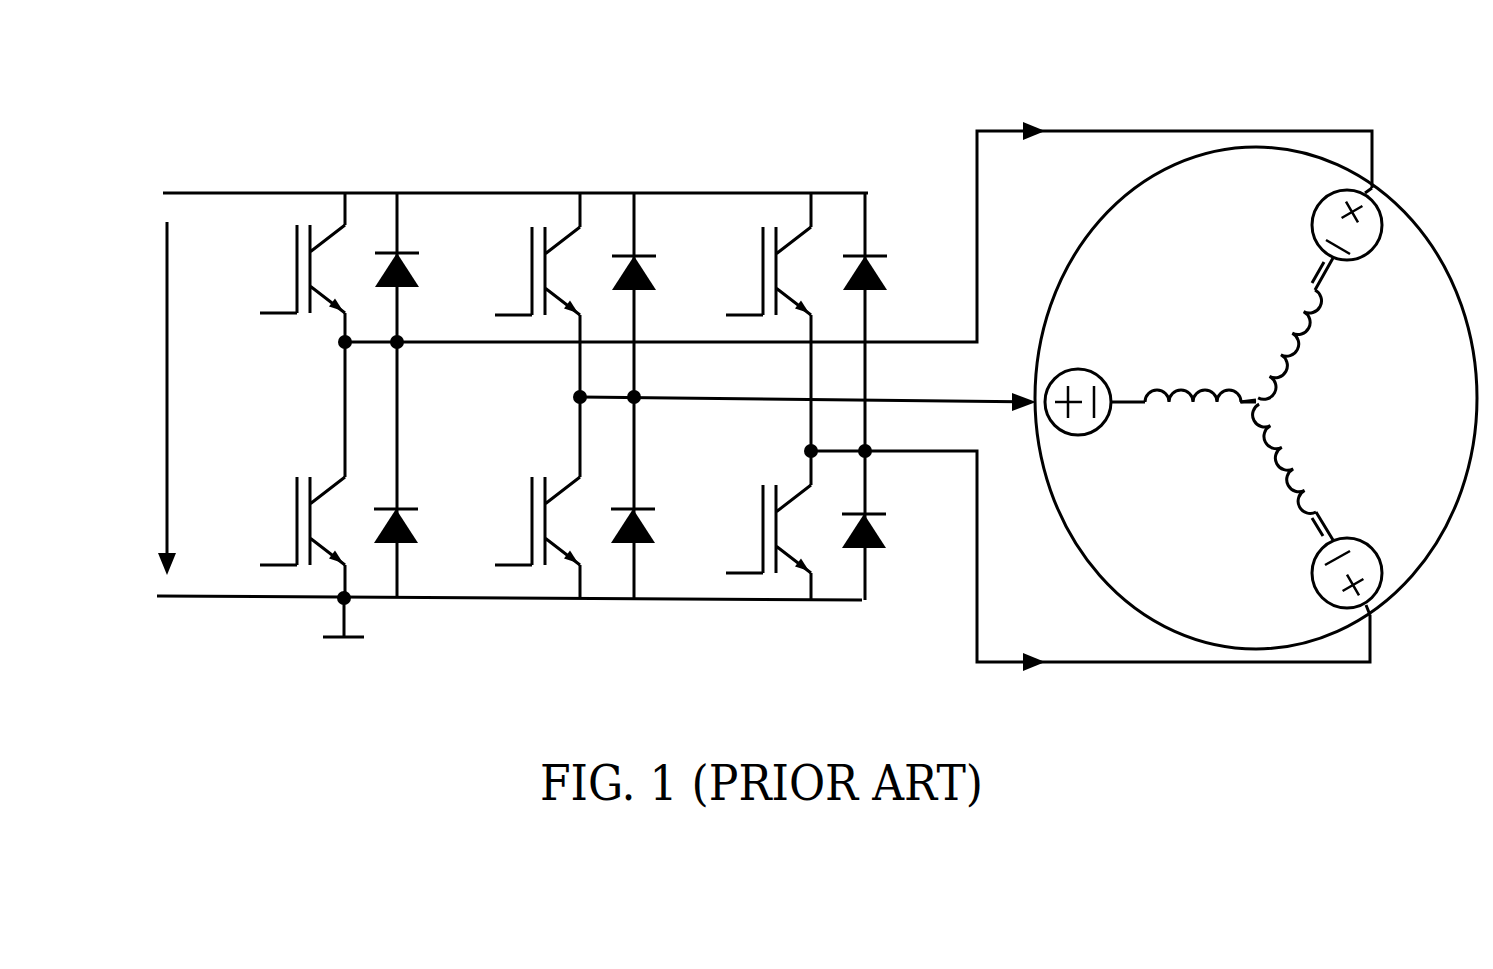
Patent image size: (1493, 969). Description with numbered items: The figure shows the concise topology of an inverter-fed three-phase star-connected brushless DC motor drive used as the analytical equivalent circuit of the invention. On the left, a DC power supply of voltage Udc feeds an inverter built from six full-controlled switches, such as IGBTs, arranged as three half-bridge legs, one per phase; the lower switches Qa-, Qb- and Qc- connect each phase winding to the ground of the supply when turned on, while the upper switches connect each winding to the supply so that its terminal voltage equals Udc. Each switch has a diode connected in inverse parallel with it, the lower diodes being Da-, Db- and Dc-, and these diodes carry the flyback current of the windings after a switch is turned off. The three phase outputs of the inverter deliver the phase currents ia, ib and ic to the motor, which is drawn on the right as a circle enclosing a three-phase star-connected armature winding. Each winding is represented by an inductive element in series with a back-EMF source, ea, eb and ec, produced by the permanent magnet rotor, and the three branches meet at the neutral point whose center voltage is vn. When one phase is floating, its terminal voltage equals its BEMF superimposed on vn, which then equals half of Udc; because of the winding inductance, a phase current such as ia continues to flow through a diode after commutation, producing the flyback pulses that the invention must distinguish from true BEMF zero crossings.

The DC supply voltage Udc is at (181, 398).
The lower switch of phase A Qa- is at (279, 521).
The lower switch of phase B Qb- is at (513, 521).
The lower switch of phase C Qc- is at (748, 529).
The lower diode of phase A Da- is at (406, 500).
The lower diode of phase B Db- is at (640, 496).
The lower diode of phase C Dc- is at (873, 504).
The phase A current ia is at (858, 199).
The phase B current ib is at (808, 363).
The phase C current ic is at (1090, 561).
The BEMF of phase A ea is at (1319, 293).
The BEMF of phase B eb is at (1150, 368).
The BEMF of phase C ec is at (1315, 509).
The center voltage of the three-phase windings vn is at (1229, 355).